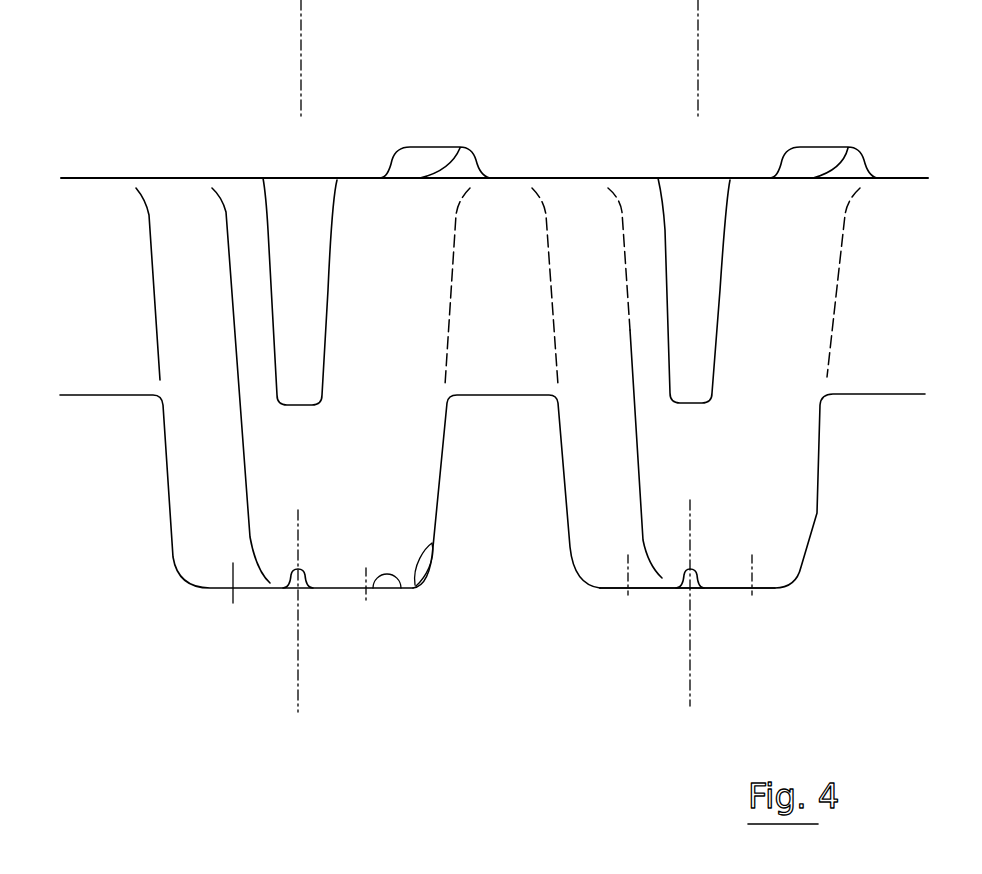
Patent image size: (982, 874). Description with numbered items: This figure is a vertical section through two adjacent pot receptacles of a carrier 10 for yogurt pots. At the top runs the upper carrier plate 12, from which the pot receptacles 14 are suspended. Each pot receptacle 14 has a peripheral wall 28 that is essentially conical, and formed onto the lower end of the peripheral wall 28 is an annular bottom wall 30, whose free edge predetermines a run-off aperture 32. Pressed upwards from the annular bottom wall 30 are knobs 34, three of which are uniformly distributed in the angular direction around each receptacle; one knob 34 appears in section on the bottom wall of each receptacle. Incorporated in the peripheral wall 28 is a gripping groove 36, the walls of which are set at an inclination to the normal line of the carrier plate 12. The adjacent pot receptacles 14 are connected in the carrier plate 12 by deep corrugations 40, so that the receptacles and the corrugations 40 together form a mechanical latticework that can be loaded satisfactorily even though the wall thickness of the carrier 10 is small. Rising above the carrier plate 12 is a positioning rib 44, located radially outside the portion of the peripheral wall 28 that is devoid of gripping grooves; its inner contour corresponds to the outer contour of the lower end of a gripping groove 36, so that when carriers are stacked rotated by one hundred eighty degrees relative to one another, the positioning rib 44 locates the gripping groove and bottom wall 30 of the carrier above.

The carrier 10 is at (568, 172).
The carrier plate 12 is at (647, 170).
The pot receptacle 14 is at (588, 544).
The peripheral wall 28 is at (416, 586).
The annular bottom wall 30 is at (401, 588).
The run-off aperture 32 is at (233, 600).
The knob 34 is at (310, 580).
The gripping groove 36 is at (192, 507).
The corrugation 40 is at (300, 404).
The positioning rib 44 is at (417, 165).